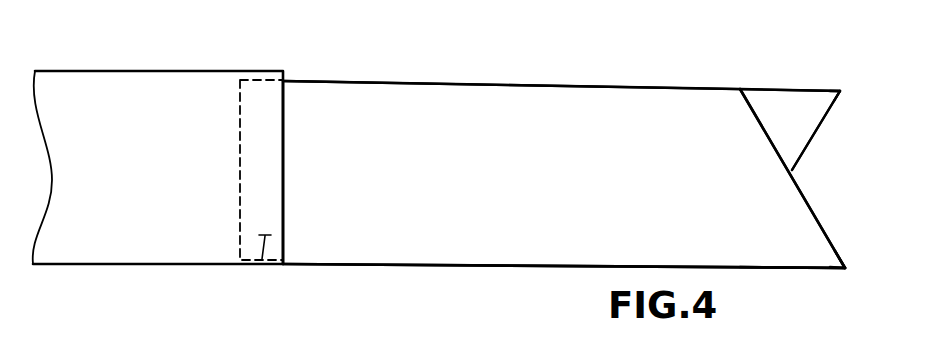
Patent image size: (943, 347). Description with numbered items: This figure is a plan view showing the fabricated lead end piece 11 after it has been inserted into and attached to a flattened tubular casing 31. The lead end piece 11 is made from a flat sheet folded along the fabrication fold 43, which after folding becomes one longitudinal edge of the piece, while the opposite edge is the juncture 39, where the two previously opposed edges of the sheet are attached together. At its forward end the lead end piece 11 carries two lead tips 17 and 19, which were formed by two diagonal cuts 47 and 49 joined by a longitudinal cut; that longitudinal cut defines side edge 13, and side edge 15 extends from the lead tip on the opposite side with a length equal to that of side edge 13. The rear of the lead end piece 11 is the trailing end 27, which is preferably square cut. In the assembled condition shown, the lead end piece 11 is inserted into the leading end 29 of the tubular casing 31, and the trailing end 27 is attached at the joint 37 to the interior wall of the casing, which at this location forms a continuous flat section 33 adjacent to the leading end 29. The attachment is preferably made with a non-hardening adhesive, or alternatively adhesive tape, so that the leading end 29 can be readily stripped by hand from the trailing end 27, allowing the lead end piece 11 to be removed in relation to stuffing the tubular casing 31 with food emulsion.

The lead end piece 11 is at (434, 96).
The side edge 13 is at (773, 88).
The side edge 15 is at (792, 269).
The lead tip 17 is at (837, 92).
The lead tip 19 is at (850, 266).
The trailing end 27 is at (240, 100).
The leading end 29 is at (285, 108).
The tubular casing 31 is at (63, 62).
The flat section 33 is at (112, 84).
The joint 37 is at (262, 262).
The juncture 39 is at (541, 266).
The fabrication fold 43 is at (540, 83).
The diagonal cut 47 is at (821, 128).
The diagonal cut 49 is at (806, 203).